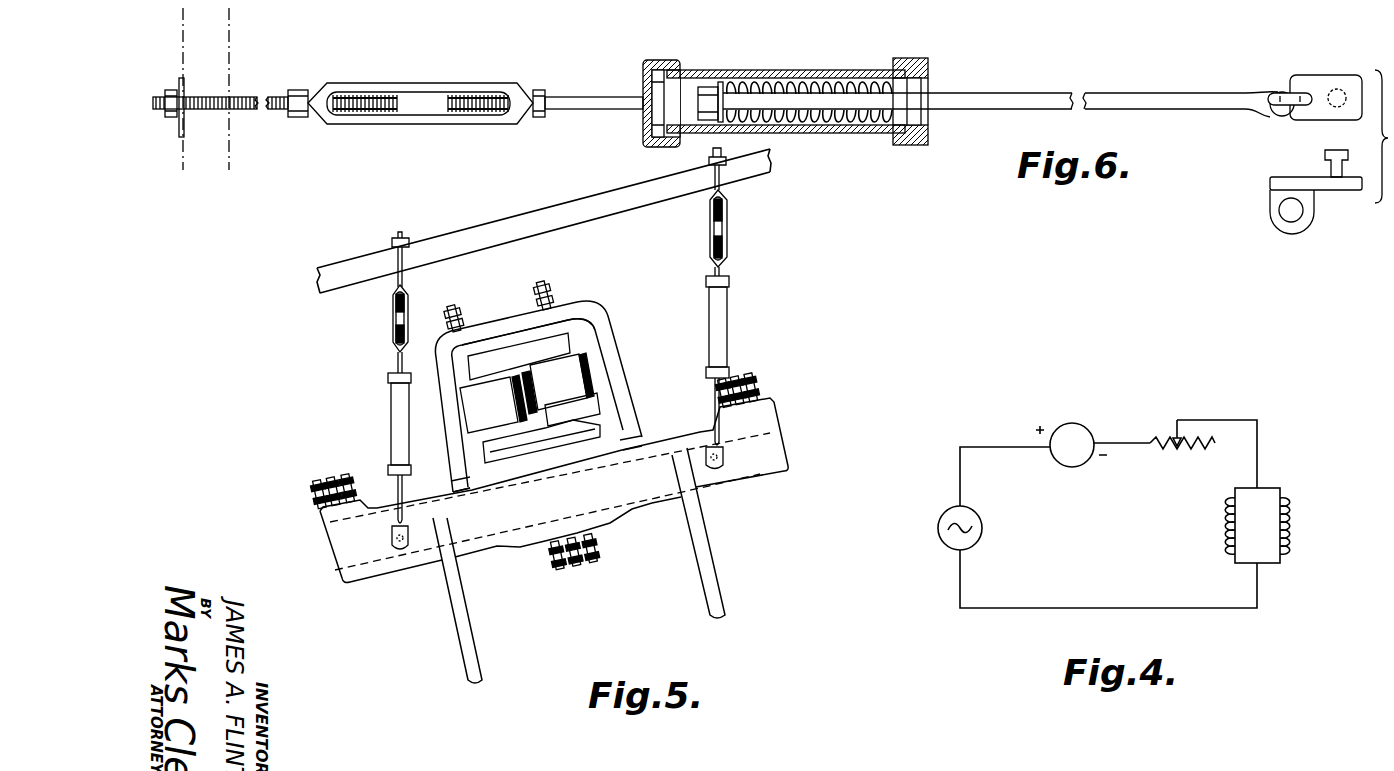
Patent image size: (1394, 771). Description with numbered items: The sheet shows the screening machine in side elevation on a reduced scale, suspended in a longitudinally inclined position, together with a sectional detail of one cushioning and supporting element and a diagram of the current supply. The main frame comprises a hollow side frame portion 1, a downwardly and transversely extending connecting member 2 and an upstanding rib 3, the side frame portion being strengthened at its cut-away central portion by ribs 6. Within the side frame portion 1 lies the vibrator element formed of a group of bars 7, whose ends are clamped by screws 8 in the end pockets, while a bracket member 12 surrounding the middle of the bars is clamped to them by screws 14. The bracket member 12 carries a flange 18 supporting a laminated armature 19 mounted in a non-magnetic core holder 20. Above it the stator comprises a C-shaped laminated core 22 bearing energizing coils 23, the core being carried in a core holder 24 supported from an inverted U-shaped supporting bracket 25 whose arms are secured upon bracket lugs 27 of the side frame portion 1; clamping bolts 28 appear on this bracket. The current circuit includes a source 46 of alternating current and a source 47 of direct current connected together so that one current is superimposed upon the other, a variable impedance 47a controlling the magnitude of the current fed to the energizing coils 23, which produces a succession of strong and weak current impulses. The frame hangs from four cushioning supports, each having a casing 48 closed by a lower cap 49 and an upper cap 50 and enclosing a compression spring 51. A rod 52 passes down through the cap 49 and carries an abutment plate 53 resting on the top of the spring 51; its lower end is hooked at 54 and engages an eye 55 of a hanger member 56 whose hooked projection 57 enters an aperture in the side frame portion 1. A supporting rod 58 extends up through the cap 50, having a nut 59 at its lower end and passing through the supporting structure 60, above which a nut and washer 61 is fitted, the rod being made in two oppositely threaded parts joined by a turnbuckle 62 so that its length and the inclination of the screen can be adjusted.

In FIG. 5, the side frame portion 1 is at (457, 528).
In FIG. 5, the connecting member 2 is at (470, 627).
In FIG. 5, the rib 3 is at (722, 602).
In FIG. 5, the strengthening rib 6 is at (612, 518).
In FIG. 5, the bar 7 is at (345, 588).
In FIG. 5, the screw 8 is at (350, 487).
In FIG. 5, the bracket member 12 is at (590, 547).
In FIG. 5, the screw 14 is at (561, 566).
In FIG. 5, the flange 18 is at (603, 428).
In FIG. 5, the armature 19 is at (590, 403).
In FIG. 5, the core holder 20 is at (449, 456).
In FIG. 5, the laminated core 22 is at (563, 357).
In FIG. 5, the energizing coil 23 is at (567, 380).
In FIG. 4, the energizing coil 23 is at (1225, 517).
In FIG. 5, the core holder 24 is at (530, 347).
In FIG. 5, the supporting bracket 25 is at (580, 308).
In FIG. 5, the bracket lug 27 is at (466, 492).
In FIG. 5, the clamping bolt 28 is at (552, 290).
In FIG. 4, the source of alternating current 46 is at (982, 523).
In FIG. 4, the source of direct current 47 is at (1083, 435).
In FIG. 4, the variable impedance 47a is at (1169, 466).
In FIG. 6, the casing 48 is at (830, 70).
In FIG. 5, the casing 48 is at (392, 415).
In FIG. 6, the cap 49 is at (930, 66).
In FIG. 6, the cap 50 is at (660, 63).
In FIG. 6, the compression spring 51 is at (847, 133).
In FIG. 6, the rod 52 is at (1108, 100).
In FIG. 5, the rod 52 is at (400, 490).
In FIG. 6, the abutment plate 53 is at (719, 80).
In FIG. 6, the hooked end 54 is at (1264, 112).
In FIG. 6, the eye 55 is at (1307, 104).
In FIG. 6, the hanger member 56 is at (1307, 86).
In FIG. 5, the hanger member 56 is at (402, 552).
In FIG. 6, the hooked projection 57 is at (1340, 128).
In FIG. 6, the supporting rod 58 is at (248, 102).
In FIG. 5, the supporting rod 58 is at (410, 270).
In FIG. 6, the nut 59 is at (647, 118).
In FIG. 6, the supporting structure 60 is at (212, 52).
In FIG. 5, the supporting structure 60 is at (577, 210).
In FIG. 6, the nut and washer 61 is at (176, 120).
In FIG. 6, the turnbuckle 62 is at (410, 118).
In FIG. 5, the turnbuckle 62 is at (393, 313).